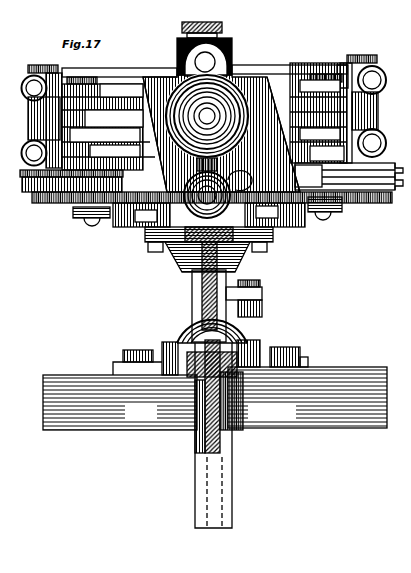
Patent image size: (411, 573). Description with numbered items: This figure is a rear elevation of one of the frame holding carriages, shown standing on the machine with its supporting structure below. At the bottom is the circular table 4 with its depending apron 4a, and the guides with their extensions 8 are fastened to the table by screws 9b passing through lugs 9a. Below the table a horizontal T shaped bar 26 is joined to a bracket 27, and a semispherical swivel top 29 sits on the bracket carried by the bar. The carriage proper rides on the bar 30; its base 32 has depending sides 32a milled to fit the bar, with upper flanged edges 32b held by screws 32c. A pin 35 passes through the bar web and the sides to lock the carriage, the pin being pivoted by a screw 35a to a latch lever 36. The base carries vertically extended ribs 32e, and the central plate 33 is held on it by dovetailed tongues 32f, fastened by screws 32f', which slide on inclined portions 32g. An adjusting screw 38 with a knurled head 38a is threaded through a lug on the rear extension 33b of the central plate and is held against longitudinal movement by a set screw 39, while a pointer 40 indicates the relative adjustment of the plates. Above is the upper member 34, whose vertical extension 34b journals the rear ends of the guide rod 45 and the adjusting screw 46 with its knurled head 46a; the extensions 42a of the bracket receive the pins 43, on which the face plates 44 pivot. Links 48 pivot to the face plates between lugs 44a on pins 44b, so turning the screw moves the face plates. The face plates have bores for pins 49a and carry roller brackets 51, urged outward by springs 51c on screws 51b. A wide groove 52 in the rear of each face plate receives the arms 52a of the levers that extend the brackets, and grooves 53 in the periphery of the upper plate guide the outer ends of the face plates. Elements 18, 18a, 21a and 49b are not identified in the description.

The circular table 4 is at (332, 367).
The depending apron 4a is at (141, 411).
The extensions of the guides 8 is at (163, 342).
The lugs 9a is at (113, 367).
The screws 9b is at (123, 352).
The sleeve 18 is at (243, 385).
The sleeve portion 18a is at (243, 413).
The shaft liner 21a is at (202, 435).
The T shaped bars 26 is at (232, 440).
The brackets 27 is at (222, 488).
The swivel top 29 is at (183, 320).
The bars 30 is at (237, 263).
The bases 32 is at (209, 215).
The depending sides 32a is at (191, 283).
The upper flanged edges 32b is at (147, 240).
The screws 32c is at (148, 248).
The vertically extended ribs 32e is at (195, 243).
The dovetailed tongues 32f is at (212, 223).
The screws 32f' is at (203, 242).
The inclined portions 32g is at (140, 252).
The central plates 33 is at (72, 205).
The rear extensions 33b is at (142, 170).
The upper members 34 is at (33, 207).
The vertical extensions 34b is at (153, 157).
The pins 35 is at (263, 297).
The screws 35a is at (258, 280).
The latch levers 36 is at (262, 310).
The adjusting screws 38 is at (235, 192).
The knurled heads 38a is at (184, 190).
The set screws 39 is at (197, 165).
The pointer 40 is at (226, 181).
The extensions 42a is at (230, 43).
The pins 43 is at (224, 25).
The face plates 44 is at (205, 76).
The lugs 44a is at (201, 124).
The pins 44b is at (100, 77).
The guide rods 45 is at (212, 62).
The adjusting screws 46 is at (238, 100).
The knurled heads 46a is at (233, 83).
The links 48 is at (203, 132).
The pins 49a is at (35, 67).
The body portion 49b is at (85, 121).
The brackets 51 is at (378, 102).
The screws 51b is at (48, 65).
The springs 51c is at (62, 75).
The groove 52 is at (196, 127).
The arms 52a is at (345, 125).
The grooves 53 is at (382, 188).